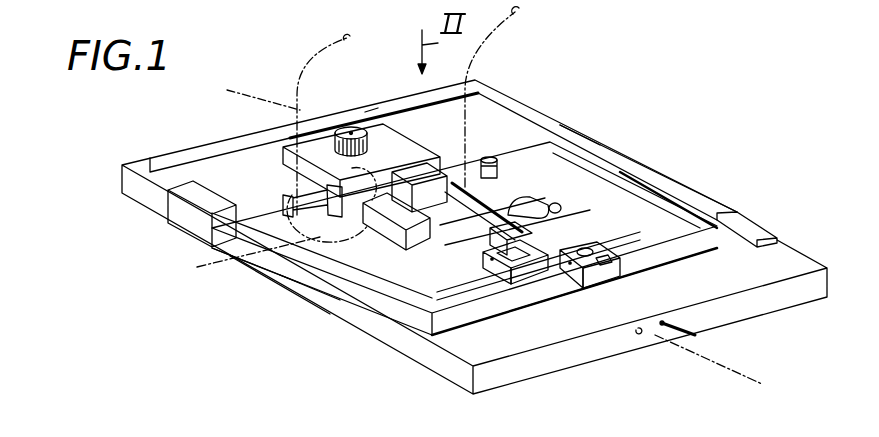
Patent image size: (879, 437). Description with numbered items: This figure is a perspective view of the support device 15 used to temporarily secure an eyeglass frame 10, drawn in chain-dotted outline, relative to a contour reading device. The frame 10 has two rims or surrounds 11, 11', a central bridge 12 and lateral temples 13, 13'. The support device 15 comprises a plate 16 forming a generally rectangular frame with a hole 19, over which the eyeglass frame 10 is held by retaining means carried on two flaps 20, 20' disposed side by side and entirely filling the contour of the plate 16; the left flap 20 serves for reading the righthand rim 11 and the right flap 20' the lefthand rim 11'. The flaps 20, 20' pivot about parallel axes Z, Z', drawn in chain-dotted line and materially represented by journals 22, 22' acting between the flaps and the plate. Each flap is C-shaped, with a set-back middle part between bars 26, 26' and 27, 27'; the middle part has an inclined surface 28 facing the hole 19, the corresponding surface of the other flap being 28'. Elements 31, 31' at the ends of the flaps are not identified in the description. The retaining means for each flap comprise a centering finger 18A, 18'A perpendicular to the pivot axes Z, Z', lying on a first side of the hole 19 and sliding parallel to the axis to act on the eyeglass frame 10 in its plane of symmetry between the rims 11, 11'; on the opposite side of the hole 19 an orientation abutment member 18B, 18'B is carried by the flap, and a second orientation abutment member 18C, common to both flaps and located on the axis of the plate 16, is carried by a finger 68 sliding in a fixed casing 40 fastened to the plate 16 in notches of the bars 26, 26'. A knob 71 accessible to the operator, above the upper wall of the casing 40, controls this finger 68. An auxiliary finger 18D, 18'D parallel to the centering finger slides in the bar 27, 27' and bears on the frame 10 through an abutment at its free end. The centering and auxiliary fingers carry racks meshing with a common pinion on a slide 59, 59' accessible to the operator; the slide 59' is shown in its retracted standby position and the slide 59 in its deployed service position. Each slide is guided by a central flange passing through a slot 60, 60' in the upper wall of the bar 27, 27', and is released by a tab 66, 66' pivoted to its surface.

The eyeglass frame 10 is at (233, 268).
The rim or surround 11 is at (418, 201).
The rim or surround 11' is at (241, 255).
The central bridge 12 is at (361, 160).
The lateral temple 13 is at (521, 97).
The lateral temple 13' is at (288, 122).
The support device 15 is at (607, 126).
The plate 16 is at (640, 160).
The centering finger 18A is at (305, 297).
The orientation abutment member 18B is at (290, 187).
The second orientation abutment member 18C is at (400, 178).
The auxiliary finger 18D is at (427, 233).
The centering finger 18'A is at (543, 221).
The orientation abutment member 18'B is at (498, 146).
The auxiliary finger 18'D is at (541, 237).
The hole 19 is at (511, 199).
The flap 20 is at (474, 237).
The flap 20' is at (661, 168).
The journal 22 is at (635, 357).
The journal 22' is at (716, 334).
The bar 26 is at (220, 137).
The bar 26' is at (384, 100).
The bar 27 is at (322, 278).
The bar 27' is at (630, 187).
The inclined surface 28 is at (277, 285).
The channel 28' is at (636, 154).
The end block 31 is at (168, 214).
The end block 31' is at (766, 215).
The fixed casing 40 is at (370, 116).
The slide 59 is at (495, 262).
The slide 59' is at (619, 265).
The slot 60 is at (574, 287).
The slot 60' is at (539, 258).
The tab 66 is at (487, 283).
The tab 66' is at (630, 288).
The finger 68 is at (366, 180).
The knob 71 is at (345, 127).
The pivot axis Z is at (708, 378).
The pivot axis Z' is at (782, 363).